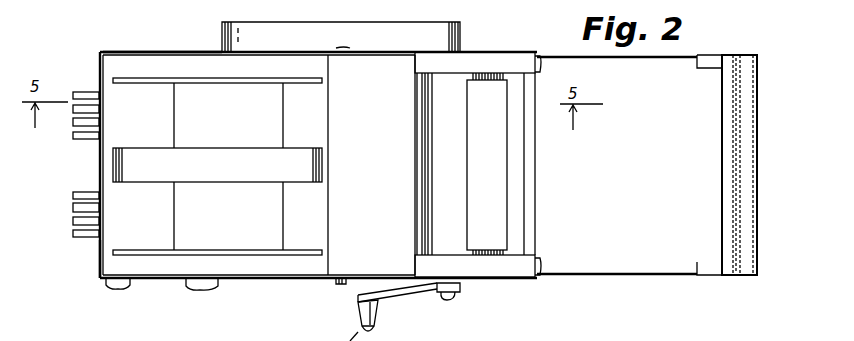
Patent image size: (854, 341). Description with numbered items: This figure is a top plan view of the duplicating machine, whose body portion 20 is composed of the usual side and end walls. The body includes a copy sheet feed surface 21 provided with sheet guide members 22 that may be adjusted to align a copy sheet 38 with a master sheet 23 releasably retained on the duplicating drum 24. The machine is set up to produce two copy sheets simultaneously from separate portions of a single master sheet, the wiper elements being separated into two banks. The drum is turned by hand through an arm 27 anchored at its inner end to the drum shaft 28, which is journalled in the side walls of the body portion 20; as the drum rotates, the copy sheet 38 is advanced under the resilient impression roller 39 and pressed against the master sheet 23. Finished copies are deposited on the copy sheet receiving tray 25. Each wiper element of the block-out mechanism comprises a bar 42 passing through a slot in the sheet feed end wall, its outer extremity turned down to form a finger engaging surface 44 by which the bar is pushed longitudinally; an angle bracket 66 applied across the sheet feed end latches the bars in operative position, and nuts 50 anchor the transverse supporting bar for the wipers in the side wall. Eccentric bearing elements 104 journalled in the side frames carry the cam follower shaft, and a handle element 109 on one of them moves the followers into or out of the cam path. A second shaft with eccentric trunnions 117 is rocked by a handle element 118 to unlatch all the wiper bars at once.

The body portion 20 is at (303, 291).
The copy sheet feed surface 21 is at (320, 126).
The sheet guide members 22 is at (166, 72).
The master sheet 23 is at (481, 137).
The duplicating drum 24 is at (465, 208).
The copy sheet receiving tray 25 is at (616, 262).
The arm 27 is at (400, 298).
The drum shaft 28 is at (450, 292).
The copy sheet 38 is at (278, 120).
The impression roller 39 is at (428, 115).
The bar 42 is at (92, 109).
The finger engaging surface 44 is at (76, 135).
The nuts 50 is at (340, 51).
The angle bracket 66 is at (95, 262).
The eccentric bearing elements 104 is at (216, 51).
The handle element 109 is at (203, 295).
The eccentric trunnions 117 is at (124, 52).
The handle element 118 is at (121, 296).